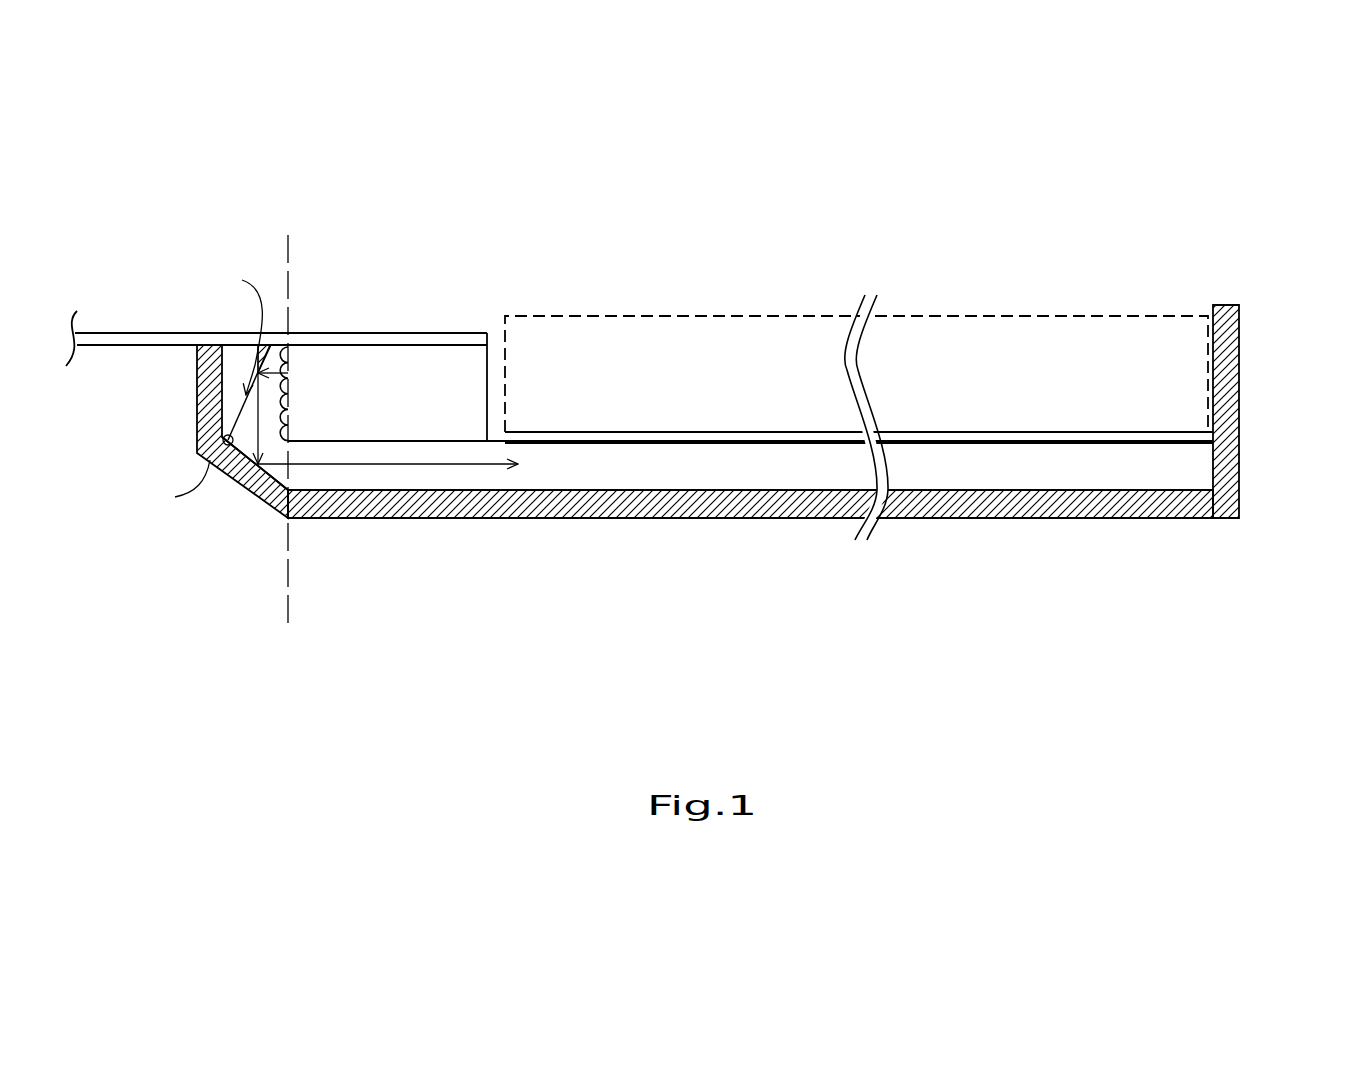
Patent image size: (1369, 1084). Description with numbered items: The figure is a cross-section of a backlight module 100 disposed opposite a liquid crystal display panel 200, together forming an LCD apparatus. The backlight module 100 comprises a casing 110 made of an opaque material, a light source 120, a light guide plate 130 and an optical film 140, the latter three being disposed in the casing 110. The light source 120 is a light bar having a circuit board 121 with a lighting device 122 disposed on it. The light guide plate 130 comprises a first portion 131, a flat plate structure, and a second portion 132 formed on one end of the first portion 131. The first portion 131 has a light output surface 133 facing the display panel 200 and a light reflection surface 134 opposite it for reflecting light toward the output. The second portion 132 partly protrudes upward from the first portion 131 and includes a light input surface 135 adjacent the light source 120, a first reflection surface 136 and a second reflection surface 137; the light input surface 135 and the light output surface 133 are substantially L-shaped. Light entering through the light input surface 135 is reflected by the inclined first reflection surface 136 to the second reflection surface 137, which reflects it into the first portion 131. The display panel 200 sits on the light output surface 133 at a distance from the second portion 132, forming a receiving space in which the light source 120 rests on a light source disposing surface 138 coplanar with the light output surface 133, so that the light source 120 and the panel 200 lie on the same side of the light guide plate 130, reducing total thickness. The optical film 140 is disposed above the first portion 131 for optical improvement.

The backlight module 100 is at (702, 488).
The casing 110 is at (1233, 395).
The light source 120 is at (261, 307).
The circuit board 121 is at (143, 340).
The lighting device 122 is at (375, 368).
The light guide plate 130 is at (683, 511).
The first portion 131 is at (372, 548).
The second portion 132 is at (233, 520).
The light output surface 133 is at (960, 438).
The light reflection surface 134 is at (967, 488).
The light input surface 135 is at (292, 403).
The first reflection surface 136 is at (240, 392).
The second reflection surface 137 is at (280, 478).
The light source disposing surface 138 is at (425, 440).
The optical film 140 is at (1202, 437).
The liquid crystal display panel 200 is at (1108, 332).